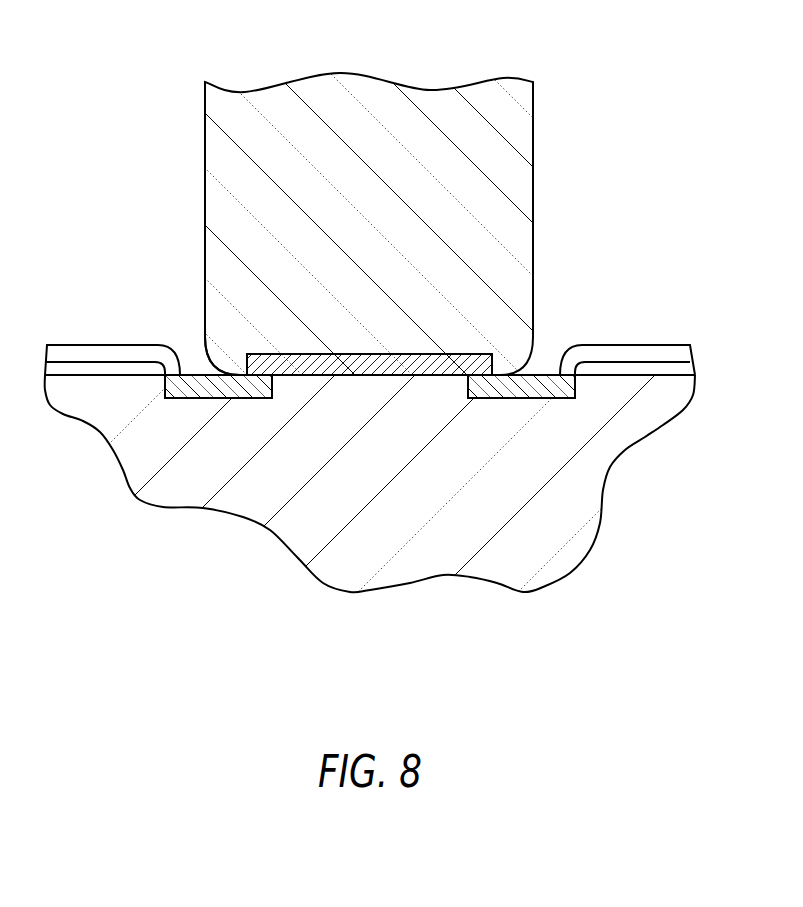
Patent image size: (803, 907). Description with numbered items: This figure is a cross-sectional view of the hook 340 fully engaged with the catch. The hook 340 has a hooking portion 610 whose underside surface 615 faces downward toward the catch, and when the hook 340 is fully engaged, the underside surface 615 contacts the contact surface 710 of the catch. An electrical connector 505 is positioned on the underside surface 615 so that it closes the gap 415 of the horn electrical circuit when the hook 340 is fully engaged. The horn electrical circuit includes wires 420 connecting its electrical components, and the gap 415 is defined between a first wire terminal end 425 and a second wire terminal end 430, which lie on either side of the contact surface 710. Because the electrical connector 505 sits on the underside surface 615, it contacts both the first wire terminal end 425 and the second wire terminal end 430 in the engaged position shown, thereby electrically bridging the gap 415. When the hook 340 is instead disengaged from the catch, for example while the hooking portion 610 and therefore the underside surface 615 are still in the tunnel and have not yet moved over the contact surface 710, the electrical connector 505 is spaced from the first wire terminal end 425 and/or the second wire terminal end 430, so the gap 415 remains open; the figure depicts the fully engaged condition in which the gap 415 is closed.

The hook 340 is at (538, 157).
The hooking portion 610 is at (538, 238).
The electrical connector 505 is at (413, 354).
The contact surface 710 is at (315, 368).
The underside surface 615 is at (423, 378).
The gap 415 is at (323, 500).
The wires 420 is at (125, 345).
The first wire terminal end 425 is at (187, 403).
The second wire terminal end 430 is at (560, 398).